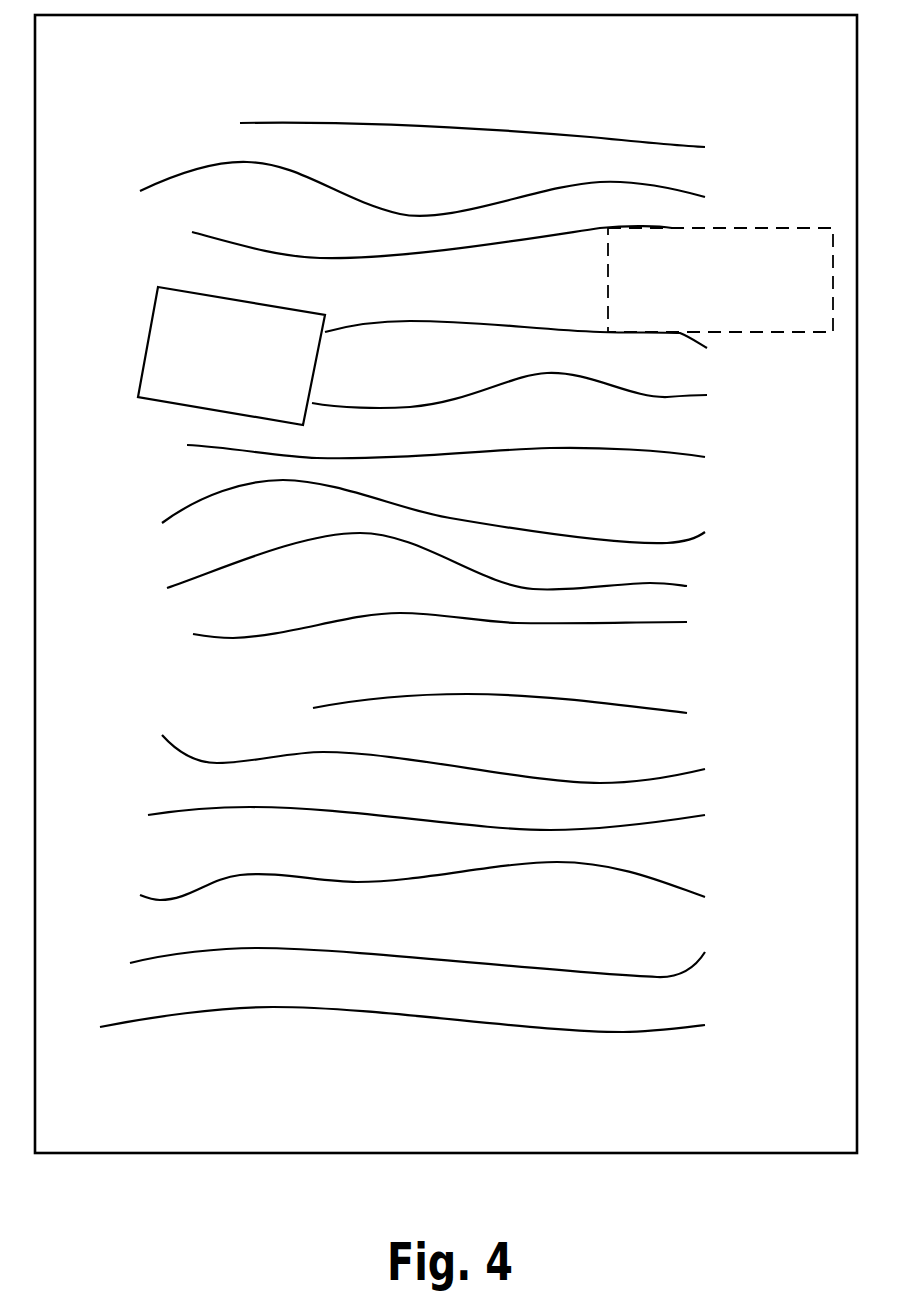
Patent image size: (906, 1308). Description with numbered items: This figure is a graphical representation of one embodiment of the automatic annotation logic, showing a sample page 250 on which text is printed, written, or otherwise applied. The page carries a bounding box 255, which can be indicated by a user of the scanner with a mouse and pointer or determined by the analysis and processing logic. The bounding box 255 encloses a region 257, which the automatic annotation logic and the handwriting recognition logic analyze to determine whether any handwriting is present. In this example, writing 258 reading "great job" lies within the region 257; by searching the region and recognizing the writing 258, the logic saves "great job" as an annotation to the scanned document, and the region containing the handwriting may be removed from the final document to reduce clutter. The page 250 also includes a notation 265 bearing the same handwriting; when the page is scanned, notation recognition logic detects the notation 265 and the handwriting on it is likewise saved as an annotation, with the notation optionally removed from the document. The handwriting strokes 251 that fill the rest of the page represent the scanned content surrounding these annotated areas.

The sample page 250 is at (89, 43).
The handwritten ink strokes 251 is at (150, 152).
The bounding box 255 is at (720, 228).
The region 257 is at (659, 261).
The writing 258 is at (691, 283).
The notation 265 is at (201, 331).